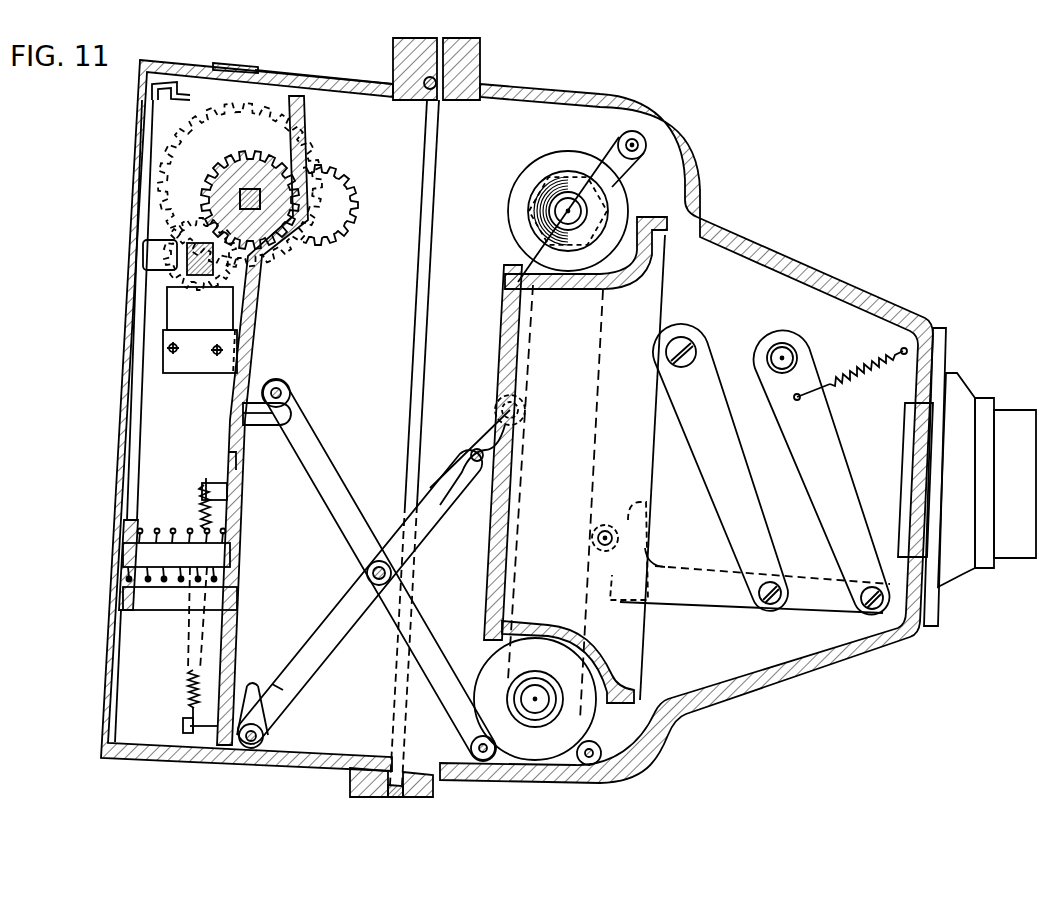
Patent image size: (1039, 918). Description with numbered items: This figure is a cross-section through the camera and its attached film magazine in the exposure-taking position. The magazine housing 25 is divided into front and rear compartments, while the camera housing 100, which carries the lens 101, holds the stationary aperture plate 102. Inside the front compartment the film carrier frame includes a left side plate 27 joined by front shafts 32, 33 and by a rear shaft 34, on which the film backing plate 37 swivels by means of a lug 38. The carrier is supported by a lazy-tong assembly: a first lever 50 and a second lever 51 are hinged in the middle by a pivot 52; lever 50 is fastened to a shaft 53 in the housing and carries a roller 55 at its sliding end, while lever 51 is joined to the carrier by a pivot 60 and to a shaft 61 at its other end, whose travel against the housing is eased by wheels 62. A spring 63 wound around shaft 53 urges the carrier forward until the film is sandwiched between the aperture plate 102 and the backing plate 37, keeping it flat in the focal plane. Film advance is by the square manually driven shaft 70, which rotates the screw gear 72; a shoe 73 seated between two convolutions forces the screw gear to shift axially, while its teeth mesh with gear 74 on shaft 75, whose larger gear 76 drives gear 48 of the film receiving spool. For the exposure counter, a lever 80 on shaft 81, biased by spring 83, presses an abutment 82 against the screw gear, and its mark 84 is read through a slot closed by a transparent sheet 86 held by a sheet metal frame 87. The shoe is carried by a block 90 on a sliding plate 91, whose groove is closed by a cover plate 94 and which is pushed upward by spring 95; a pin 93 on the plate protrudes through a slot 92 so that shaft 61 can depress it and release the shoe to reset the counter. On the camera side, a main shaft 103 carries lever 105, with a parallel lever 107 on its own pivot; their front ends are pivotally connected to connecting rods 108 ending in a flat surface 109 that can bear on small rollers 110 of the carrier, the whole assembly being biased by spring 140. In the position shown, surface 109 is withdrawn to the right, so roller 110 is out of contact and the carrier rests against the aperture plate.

The housing 25 is at (300, 88).
The housing 100 is at (610, 104).
The mark 84 is at (166, 82).
The protective sheet metal frame 87 is at (228, 66).
The transparent sheet of plastic material 86 is at (262, 80).
The gear 76 is at (323, 157).
The gear 74 is at (253, 158).
The shaft 75 is at (230, 176).
The manually driven shaft 70 is at (200, 228).
The abutment 82 is at (158, 242).
The screw gear 72 is at (162, 275).
The shoe 73 is at (168, 307).
The block 90 is at (193, 372).
The lever 80 is at (143, 416).
The cover plate 94 is at (230, 456).
The spring 83 is at (176, 532).
The shaft 81 is at (148, 542).
The spring 95 is at (186, 690).
The slot 92 is at (243, 438).
The plate 91 is at (243, 356).
The wheels 62 is at (288, 384).
The shaft 61 is at (283, 393).
The pin 93 is at (290, 418).
The second lever 51 is at (342, 494).
The pivot 52 is at (366, 572).
The first lever 50 is at (340, 600).
The spring 63 is at (270, 718).
The shaft 53 is at (249, 748).
The pivot 60 is at (486, 760).
The shaft 33 is at (600, 760).
The film backing plate 37 is at (507, 324).
The rollers 55 is at (497, 400).
The shaft 34 is at (474, 448).
The lug 38 is at (470, 452).
The left side plate 27 is at (604, 320).
The gear 48 is at (555, 178).
The shaft 32 is at (646, 150).
The aperture plate 102 is at (650, 262).
The main shaft 103 is at (797, 352).
The spring 140 is at (860, 372).
The lever 105 is at (830, 440).
The lever 107 is at (730, 478).
The connecting rods 108 is at (692, 610).
The flat surface 109 is at (612, 596).
The small rollers 110 is at (592, 536).
The lens 101 is at (1012, 410).